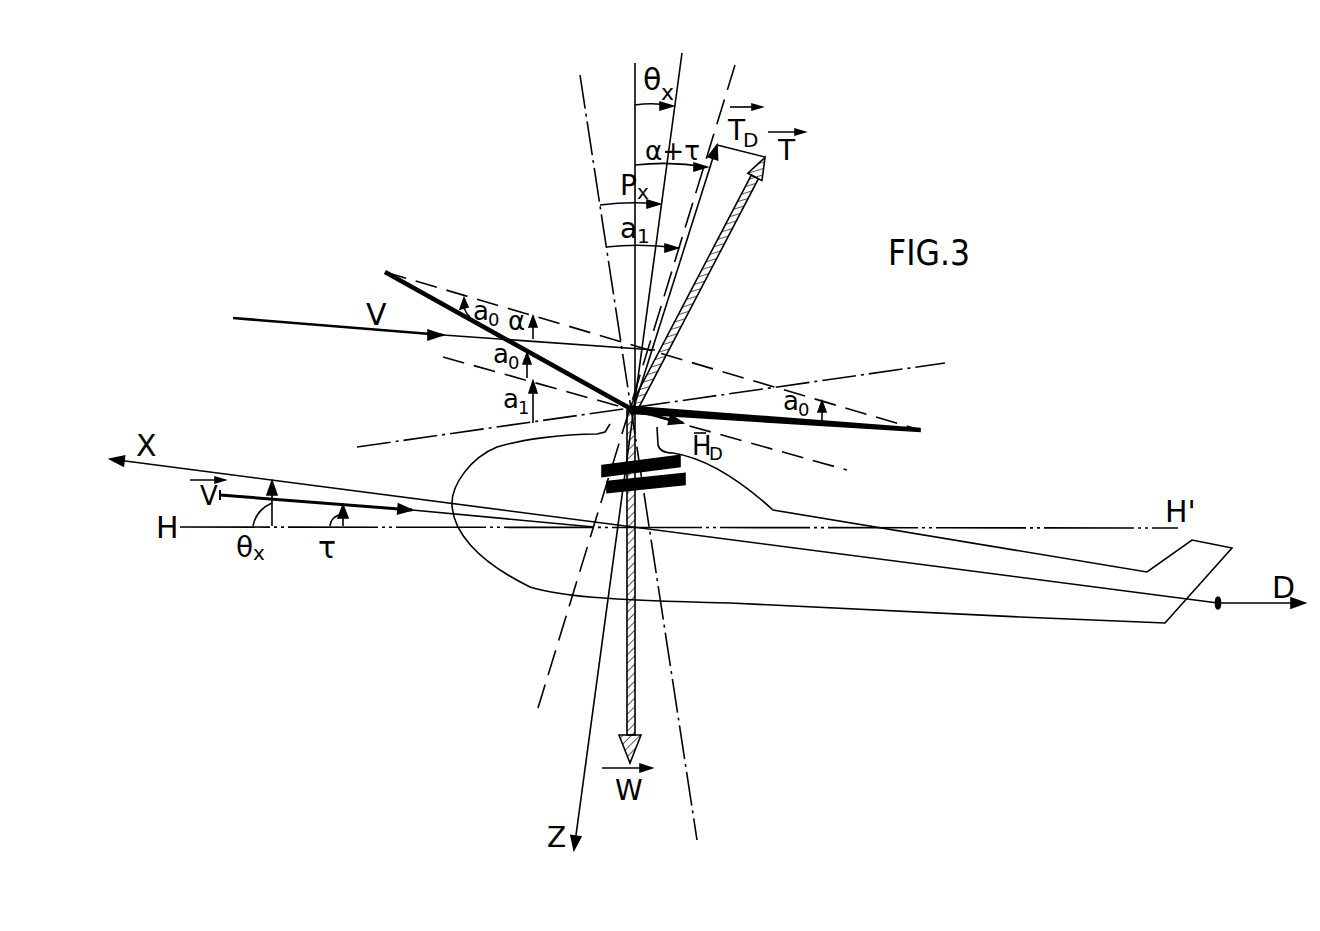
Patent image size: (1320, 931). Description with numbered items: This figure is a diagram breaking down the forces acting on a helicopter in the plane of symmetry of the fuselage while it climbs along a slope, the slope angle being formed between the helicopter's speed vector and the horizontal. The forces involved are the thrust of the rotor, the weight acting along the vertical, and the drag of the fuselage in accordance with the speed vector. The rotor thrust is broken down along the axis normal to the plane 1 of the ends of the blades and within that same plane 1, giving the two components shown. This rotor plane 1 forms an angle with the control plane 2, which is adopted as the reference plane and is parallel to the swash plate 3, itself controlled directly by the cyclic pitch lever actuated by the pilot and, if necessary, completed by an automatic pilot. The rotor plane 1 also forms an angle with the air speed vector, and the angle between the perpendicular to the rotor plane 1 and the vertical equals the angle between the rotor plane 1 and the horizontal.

The plane of the ends of the blades 1 is at (721, 372).
The control plane 2 is at (888, 372).
The swash plate 3 is at (667, 485).